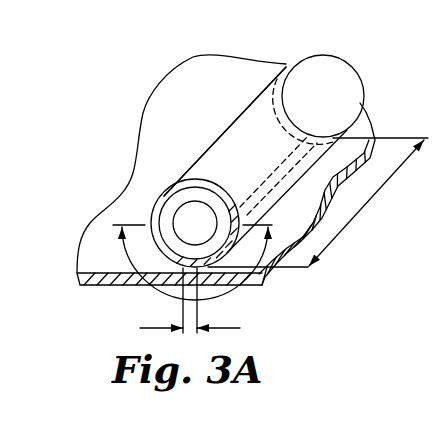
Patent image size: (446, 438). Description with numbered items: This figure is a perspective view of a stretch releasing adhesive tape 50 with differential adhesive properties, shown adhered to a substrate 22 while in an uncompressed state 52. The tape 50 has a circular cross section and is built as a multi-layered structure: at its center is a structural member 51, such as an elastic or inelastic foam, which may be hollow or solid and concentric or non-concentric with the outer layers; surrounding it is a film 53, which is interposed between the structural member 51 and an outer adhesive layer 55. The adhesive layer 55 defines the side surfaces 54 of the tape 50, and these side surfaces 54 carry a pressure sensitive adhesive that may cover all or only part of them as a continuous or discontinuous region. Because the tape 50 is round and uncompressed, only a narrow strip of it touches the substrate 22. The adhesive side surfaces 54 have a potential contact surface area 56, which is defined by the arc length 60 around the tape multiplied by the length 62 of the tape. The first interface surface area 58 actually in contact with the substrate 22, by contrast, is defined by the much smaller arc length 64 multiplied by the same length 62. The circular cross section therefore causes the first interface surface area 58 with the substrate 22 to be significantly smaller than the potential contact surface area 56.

The substrate 22 is at (173, 80).
The stretch releasing adhesive tape 50 is at (250, 85).
The structural member 51 is at (170, 212).
The uncompressed state 52 is at (341, 52).
The film 53 is at (160, 210).
The side surfaces 54 is at (241, 121).
The adhesive layer 55 is at (188, 212).
The potential contact surface area 56 is at (160, 253).
The first interface surface area 58 is at (275, 172).
The arc length 60 is at (177, 291).
The length 62 is at (363, 207).
The arc length 64 is at (232, 327).